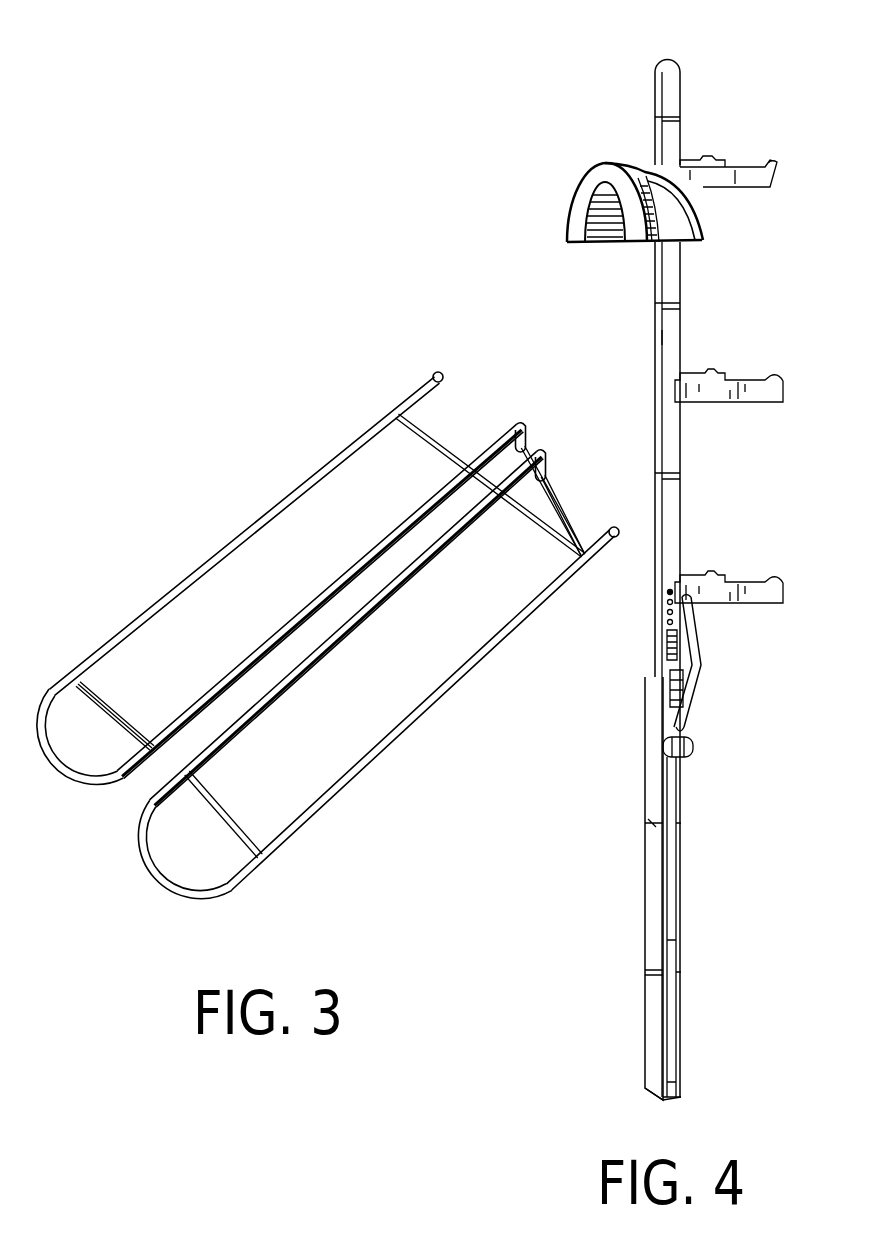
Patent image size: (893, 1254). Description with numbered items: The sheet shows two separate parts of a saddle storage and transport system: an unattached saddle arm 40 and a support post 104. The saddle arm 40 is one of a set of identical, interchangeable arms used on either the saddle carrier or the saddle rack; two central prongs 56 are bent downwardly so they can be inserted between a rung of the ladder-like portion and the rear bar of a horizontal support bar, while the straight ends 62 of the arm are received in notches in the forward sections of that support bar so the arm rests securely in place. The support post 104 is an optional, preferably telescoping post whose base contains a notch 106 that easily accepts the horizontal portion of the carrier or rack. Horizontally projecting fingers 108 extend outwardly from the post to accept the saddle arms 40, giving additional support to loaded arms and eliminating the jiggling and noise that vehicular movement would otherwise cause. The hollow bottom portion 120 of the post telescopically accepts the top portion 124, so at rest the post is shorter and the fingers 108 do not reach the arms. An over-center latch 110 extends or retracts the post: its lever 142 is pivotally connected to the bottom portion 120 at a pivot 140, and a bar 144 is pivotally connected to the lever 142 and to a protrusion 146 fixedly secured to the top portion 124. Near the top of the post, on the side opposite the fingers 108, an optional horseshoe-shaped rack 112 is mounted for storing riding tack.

In FIG. 3, the saddle arm 40 is at (335, 797).
In FIG. 3, the central prongs 56 is at (528, 440).
In FIG. 3, the straight ends 62 is at (441, 385).
In FIG. 4, the support post 104 is at (675, 86).
In FIG. 4, the notch 106 is at (668, 1097).
In FIG. 4, the horizontally projecting fingers 108 is at (778, 400).
In FIG. 4, the over-center latch 110 is at (697, 690).
In FIG. 4, the horseshoe-shaped rack 112 is at (567, 194).
In FIG. 4, the bottom portion 120 is at (680, 910).
In FIG. 4, the top portion 124 is at (672, 337).
In FIG. 4, the pivotal connection 140 is at (660, 740).
In FIG. 4, the lever 142 is at (697, 660).
In FIG. 4, the bar 144 is at (664, 678).
In FIG. 4, the protrusion 146 is at (664, 637).